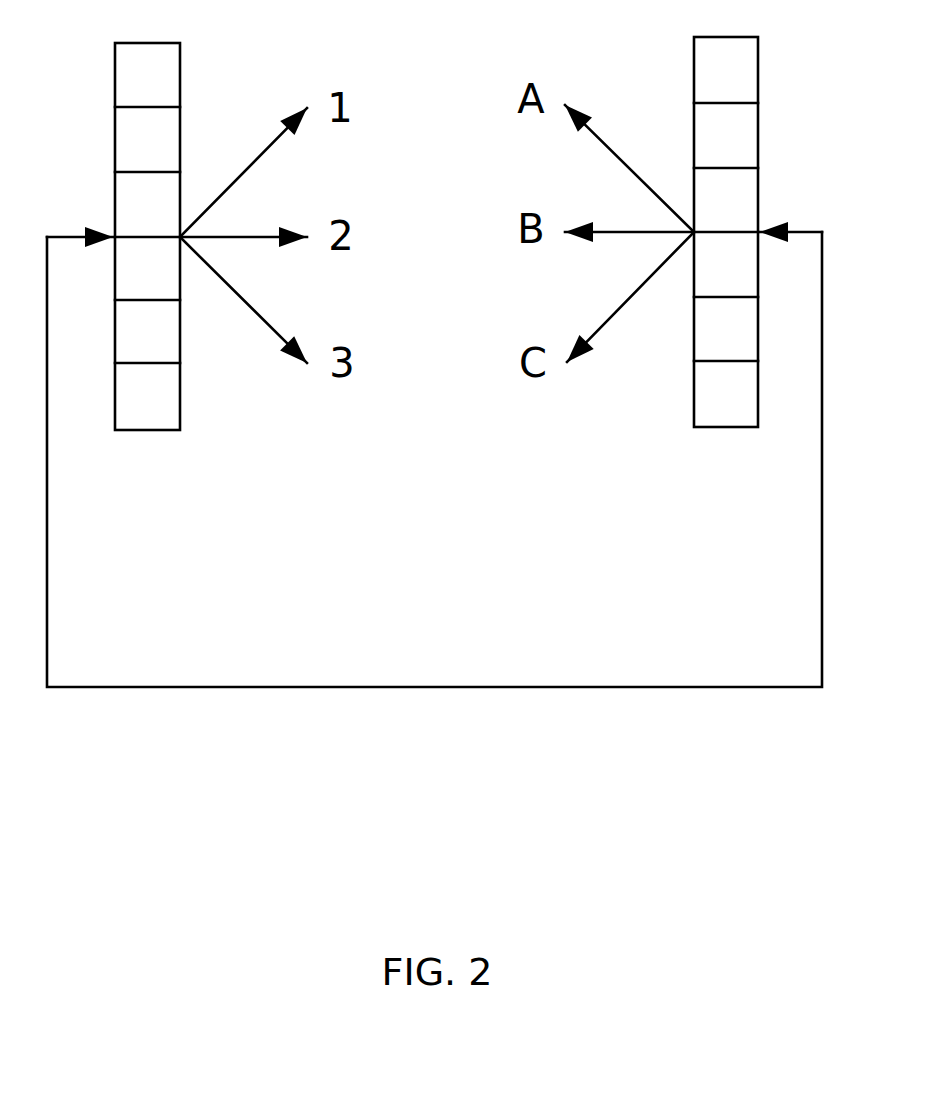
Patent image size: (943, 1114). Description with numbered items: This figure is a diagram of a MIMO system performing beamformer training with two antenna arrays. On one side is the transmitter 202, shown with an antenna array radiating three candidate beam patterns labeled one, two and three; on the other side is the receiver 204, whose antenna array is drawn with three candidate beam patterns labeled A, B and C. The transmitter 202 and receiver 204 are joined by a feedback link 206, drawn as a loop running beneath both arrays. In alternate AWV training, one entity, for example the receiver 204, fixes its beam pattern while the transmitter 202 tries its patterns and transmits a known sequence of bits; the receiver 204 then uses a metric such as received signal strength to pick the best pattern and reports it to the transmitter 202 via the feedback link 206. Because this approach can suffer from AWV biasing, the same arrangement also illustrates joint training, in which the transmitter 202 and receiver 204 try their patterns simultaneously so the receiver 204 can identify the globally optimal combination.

The transmitter 202 is at (148, 432).
The receiver 204 is at (725, 427).
The feedback link 206 is at (438, 687).